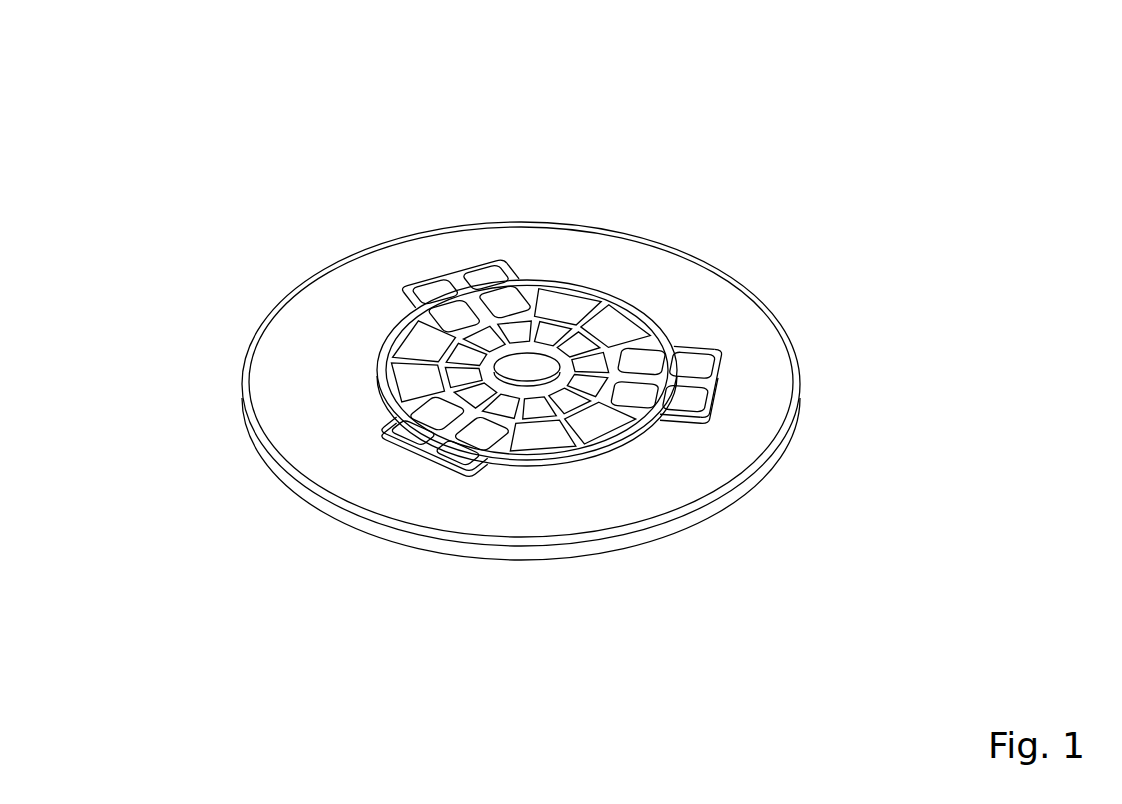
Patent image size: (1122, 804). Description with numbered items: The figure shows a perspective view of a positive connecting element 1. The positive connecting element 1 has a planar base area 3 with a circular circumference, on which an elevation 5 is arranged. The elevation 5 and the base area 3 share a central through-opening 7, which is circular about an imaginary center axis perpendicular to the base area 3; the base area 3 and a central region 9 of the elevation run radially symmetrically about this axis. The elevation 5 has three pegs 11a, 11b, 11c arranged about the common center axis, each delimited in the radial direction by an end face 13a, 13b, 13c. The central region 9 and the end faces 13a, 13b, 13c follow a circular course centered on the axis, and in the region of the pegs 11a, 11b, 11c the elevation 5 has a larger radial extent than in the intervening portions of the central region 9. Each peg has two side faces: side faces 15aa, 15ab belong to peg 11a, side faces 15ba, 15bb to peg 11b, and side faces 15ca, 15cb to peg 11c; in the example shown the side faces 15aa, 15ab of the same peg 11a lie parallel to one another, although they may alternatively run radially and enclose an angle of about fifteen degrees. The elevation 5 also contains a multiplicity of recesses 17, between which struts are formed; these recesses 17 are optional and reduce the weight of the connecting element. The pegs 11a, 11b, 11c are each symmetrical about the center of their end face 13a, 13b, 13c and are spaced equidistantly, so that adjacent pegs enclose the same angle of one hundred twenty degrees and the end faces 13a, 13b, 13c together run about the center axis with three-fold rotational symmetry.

The positive connecting element 1 is at (798, 343).
The base area 3 is at (722, 478).
The elevation 5 is at (597, 403).
The central through-opening 7 is at (527, 347).
The central region 9 is at (638, 315).
The peg 11a is at (408, 462).
The peg 11b is at (432, 267).
The peg 11c is at (713, 377).
The end face 13a is at (430, 465).
The end face 13b is at (461, 268).
The end face 13c is at (712, 398).
The side face 15aa is at (378, 432).
The side face 15ab is at (468, 463).
The side face 15ba is at (503, 262).
The side face 15bb is at (410, 293).
The side face 15ca is at (680, 415).
The side face 15cb is at (698, 338).
The recess 17 is at (557, 292).